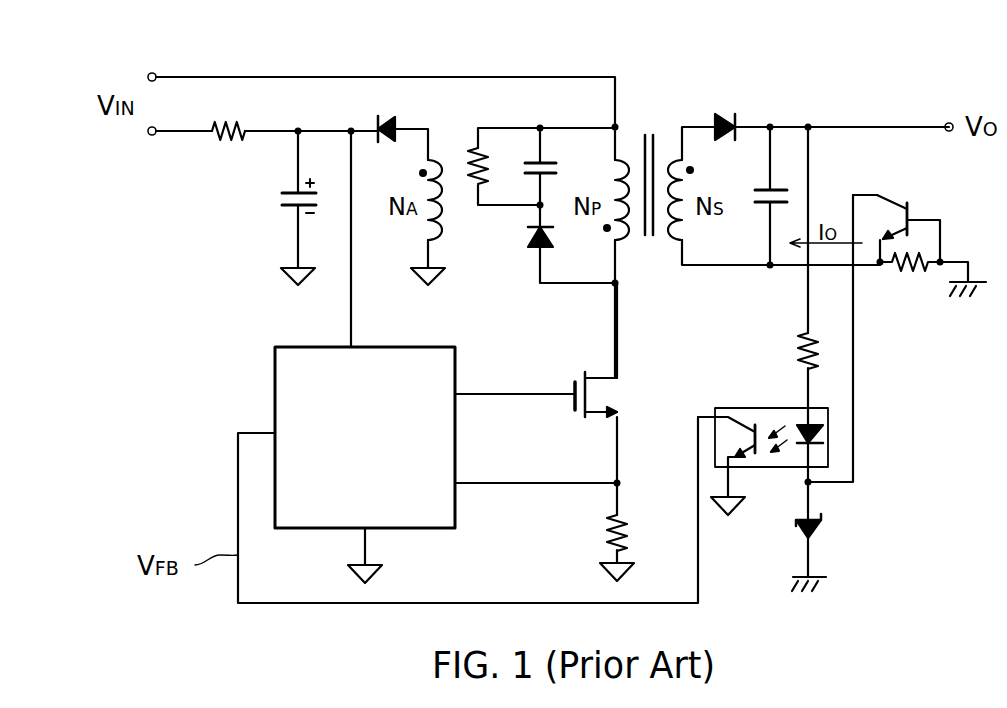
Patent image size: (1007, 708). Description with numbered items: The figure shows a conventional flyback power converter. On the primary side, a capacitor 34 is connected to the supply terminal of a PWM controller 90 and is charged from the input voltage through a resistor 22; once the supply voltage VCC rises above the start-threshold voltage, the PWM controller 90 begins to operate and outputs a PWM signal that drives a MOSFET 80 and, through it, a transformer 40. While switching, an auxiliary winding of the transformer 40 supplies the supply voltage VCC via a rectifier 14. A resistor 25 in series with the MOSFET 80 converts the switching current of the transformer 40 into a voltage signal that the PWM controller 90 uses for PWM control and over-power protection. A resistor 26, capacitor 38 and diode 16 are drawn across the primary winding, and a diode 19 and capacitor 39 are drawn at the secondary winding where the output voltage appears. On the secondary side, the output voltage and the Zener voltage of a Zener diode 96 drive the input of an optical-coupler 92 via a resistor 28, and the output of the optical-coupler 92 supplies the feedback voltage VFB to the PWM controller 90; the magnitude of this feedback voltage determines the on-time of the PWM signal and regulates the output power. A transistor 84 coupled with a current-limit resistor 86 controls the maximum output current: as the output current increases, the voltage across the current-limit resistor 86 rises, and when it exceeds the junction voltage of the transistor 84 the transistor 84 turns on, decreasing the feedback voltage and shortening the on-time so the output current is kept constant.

The resistor 22 is at (227, 112).
The rectifier 14 is at (384, 112).
The capacitor 34 is at (282, 210).
The snubber resistor 26 is at (483, 138).
The snubber capacitor 38 is at (552, 150).
The snubber diode 16 is at (530, 247).
The transformer 40 is at (650, 117).
The output rectifier diode 19 is at (722, 110).
The output capacitor 39 is at (755, 205).
The transistor 84 is at (905, 200).
The current-limit resistor 86 is at (910, 280).
The PWM controller 90 is at (458, 357).
The MOSFET 80 is at (615, 407).
The resistor 25 is at (600, 535).
The resistor 28 is at (793, 358).
The optical-coupler 92 is at (740, 407).
The Zener diode 96 is at (828, 530).